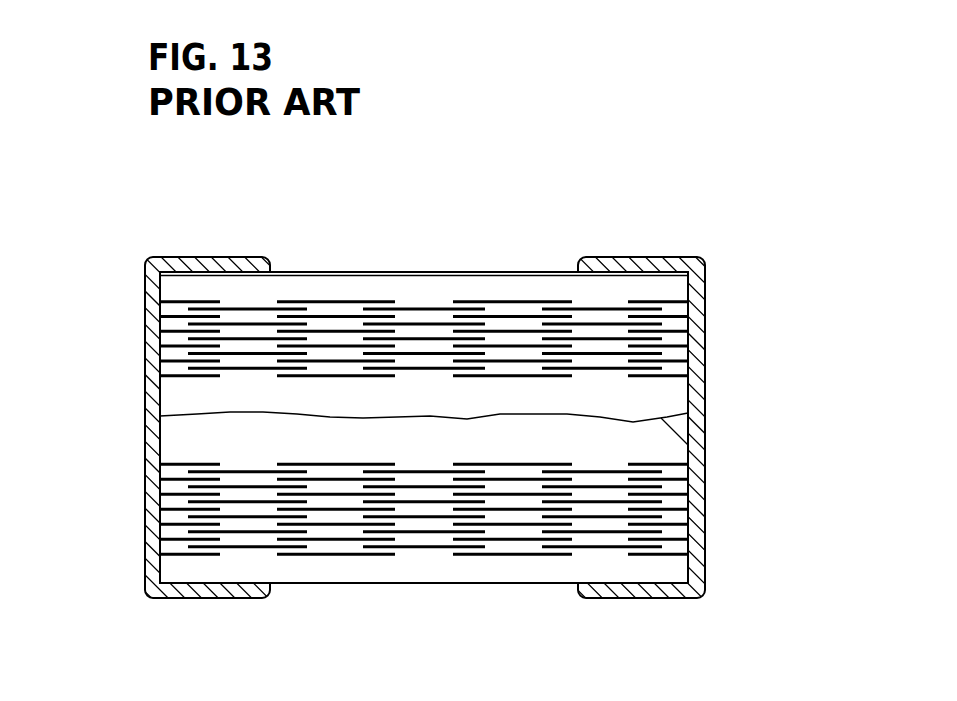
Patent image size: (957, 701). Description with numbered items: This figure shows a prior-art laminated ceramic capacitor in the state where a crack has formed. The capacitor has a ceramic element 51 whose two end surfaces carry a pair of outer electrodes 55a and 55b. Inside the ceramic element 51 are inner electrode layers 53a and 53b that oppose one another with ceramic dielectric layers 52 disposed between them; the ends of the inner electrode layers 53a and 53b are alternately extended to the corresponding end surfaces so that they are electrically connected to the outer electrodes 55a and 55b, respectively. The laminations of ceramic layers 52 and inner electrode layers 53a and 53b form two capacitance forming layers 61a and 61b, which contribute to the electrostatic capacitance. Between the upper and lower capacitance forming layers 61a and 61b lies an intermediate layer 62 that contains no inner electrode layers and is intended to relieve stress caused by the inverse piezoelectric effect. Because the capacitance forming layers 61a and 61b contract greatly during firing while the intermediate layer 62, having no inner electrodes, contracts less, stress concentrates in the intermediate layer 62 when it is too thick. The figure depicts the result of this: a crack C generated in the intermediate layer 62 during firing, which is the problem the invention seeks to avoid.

The ceramic element 51 is at (420, 272).
The ceramic layer 52 is at (533, 340).
The inner electrode layer 53a is at (177, 332).
The inner electrode layer 53b is at (303, 340).
The outer electrode 55a is at (143, 277).
The outer electrode 55b is at (706, 404).
The capacitance forming layer 61a is at (107, 297).
The capacitance forming layer 61b is at (107, 467).
The intermediate layer 62 is at (107, 382).
The crack C is at (704, 450).